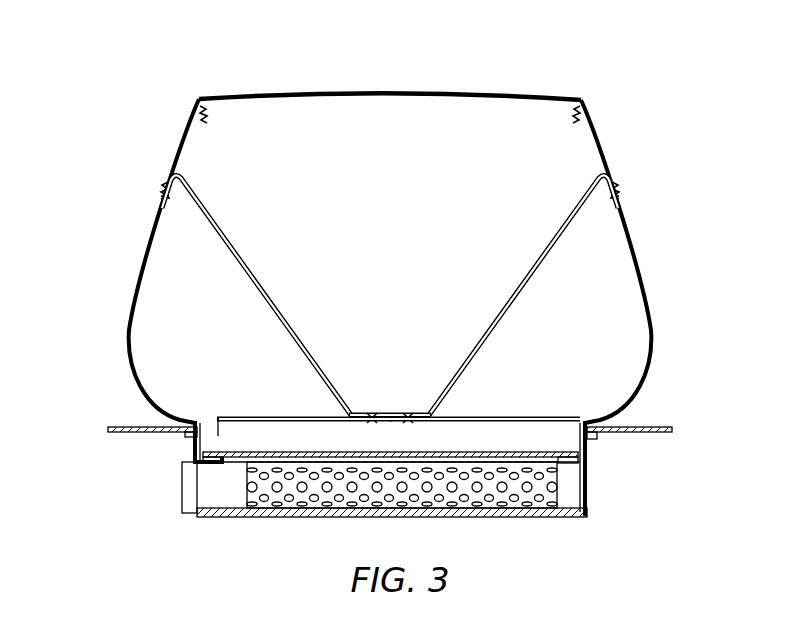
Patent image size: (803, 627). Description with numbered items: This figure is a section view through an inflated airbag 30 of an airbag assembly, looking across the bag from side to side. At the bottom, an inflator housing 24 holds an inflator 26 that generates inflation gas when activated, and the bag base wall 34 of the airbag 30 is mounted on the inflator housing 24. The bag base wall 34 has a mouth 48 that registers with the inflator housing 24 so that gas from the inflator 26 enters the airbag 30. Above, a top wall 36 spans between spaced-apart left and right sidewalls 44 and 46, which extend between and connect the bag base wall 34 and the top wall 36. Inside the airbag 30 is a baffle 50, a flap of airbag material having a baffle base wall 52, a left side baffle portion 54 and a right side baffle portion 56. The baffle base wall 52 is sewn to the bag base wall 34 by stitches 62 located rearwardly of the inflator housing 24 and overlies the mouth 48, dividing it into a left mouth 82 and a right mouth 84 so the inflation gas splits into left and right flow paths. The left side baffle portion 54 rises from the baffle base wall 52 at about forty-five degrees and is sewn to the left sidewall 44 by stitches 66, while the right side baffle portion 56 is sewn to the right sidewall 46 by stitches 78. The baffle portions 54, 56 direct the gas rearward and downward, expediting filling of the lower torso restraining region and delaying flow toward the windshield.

The airbag 30 is at (198, 84).
The top wall 36 is at (405, 88).
The left sidewall 44 is at (137, 272).
The right sidewall 46 is at (640, 245).
The mouth 48 is at (218, 436).
The stitches 66 is at (162, 186).
The stitches 78 is at (618, 187).
The baffle 50 is at (540, 262).
The left side baffle portion 54 is at (260, 287).
The right side baffle portion 56 is at (503, 307).
The baffle base wall 52 is at (392, 410).
The stitches 62 is at (370, 410).
The left mouth 82 is at (264, 416).
The right mouth 84 is at (516, 416).
The bag base wall 34 is at (606, 432).
The inflator housing 24 is at (588, 488).
The inflator 26 is at (226, 492).